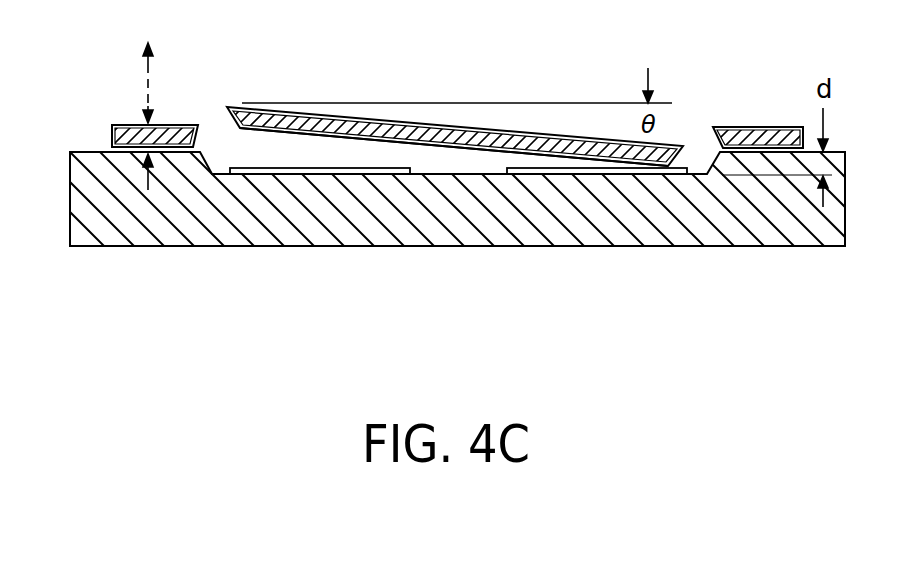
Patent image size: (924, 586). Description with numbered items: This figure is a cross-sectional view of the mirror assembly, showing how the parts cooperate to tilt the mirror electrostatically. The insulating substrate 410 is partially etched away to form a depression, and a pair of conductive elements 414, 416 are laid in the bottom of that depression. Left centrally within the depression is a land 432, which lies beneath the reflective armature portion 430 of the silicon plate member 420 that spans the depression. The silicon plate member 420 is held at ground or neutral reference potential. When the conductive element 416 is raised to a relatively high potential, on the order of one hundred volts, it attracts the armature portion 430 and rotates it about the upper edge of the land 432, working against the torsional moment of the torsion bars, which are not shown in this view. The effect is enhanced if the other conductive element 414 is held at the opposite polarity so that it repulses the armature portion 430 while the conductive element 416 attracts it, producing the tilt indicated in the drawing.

The substrate 410 is at (200, 247).
The conductive element 414 is at (270, 172).
The conductive element 416 is at (529, 172).
The plate member 420 is at (130, 124).
The armature portion 430 is at (284, 134).
The land 432 is at (460, 148).